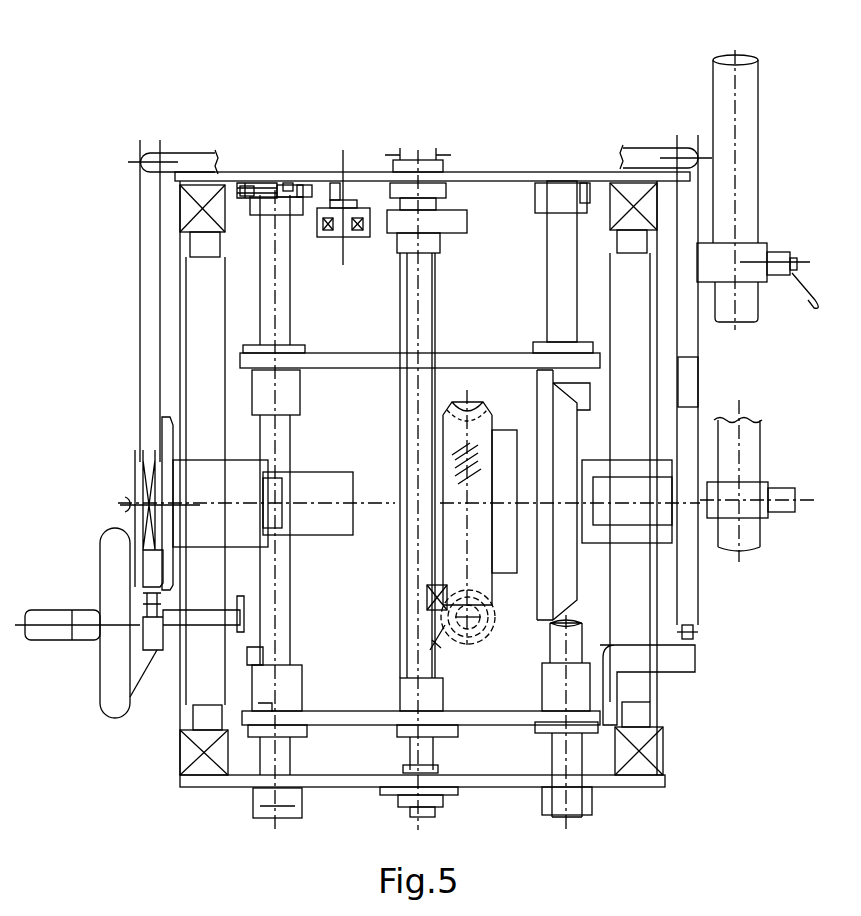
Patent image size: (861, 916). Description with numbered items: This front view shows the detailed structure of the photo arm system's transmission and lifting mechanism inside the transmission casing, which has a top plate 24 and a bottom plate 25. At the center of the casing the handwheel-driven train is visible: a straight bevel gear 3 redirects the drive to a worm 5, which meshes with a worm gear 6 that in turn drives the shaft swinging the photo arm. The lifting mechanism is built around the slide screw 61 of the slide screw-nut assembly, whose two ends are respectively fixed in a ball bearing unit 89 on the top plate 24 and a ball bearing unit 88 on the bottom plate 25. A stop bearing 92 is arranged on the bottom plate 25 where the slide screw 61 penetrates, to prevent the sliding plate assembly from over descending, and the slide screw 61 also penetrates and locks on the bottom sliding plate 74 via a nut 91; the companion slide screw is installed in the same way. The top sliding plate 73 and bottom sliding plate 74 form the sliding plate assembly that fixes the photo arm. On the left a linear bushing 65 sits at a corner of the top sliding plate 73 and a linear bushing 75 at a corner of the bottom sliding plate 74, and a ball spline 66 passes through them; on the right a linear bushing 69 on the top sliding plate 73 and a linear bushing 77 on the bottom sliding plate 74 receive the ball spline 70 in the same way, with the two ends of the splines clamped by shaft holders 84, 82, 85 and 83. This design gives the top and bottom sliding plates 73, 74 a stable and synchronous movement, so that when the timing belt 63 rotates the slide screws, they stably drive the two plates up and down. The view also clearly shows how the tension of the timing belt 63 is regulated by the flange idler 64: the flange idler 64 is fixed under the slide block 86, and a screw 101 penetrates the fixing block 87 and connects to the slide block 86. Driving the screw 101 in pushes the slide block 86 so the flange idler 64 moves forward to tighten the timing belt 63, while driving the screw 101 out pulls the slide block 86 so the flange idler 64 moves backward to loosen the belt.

The straight bevel gear 3 is at (440, 655).
The worm 5 is at (495, 640).
The worm gear 6 is at (488, 420).
The top plate 24 is at (545, 210).
The bottom plate 25 is at (322, 780).
The slide screw 61 is at (410, 327).
The timing belt 63 is at (465, 220).
The flange idler 64 is at (317, 230).
The linear bushing 65 is at (255, 398).
The ball spline 66 is at (267, 298).
The linear bushing 69 is at (660, 390).
The ball spline 70 is at (558, 190).
The top sliding plate 73 is at (580, 355).
The bottom sliding plate 74 is at (600, 712).
The linear bushing 75 is at (267, 688).
The linear bushing 77 is at (580, 678).
The shaft holder 82 is at (262, 810).
The shaft holder 83 is at (588, 810).
The shaft holder 84 is at (258, 207).
The shaft holder 85 is at (585, 195).
The slide block 86 is at (335, 190).
The fixing block 87 is at (290, 183).
The ball bearing unit 88 is at (457, 790).
The ball bearing unit 89 is at (440, 190).
The nut 91 is at (392, 732).
The stop bearing 92 is at (440, 770).
The screw 101 is at (245, 183).